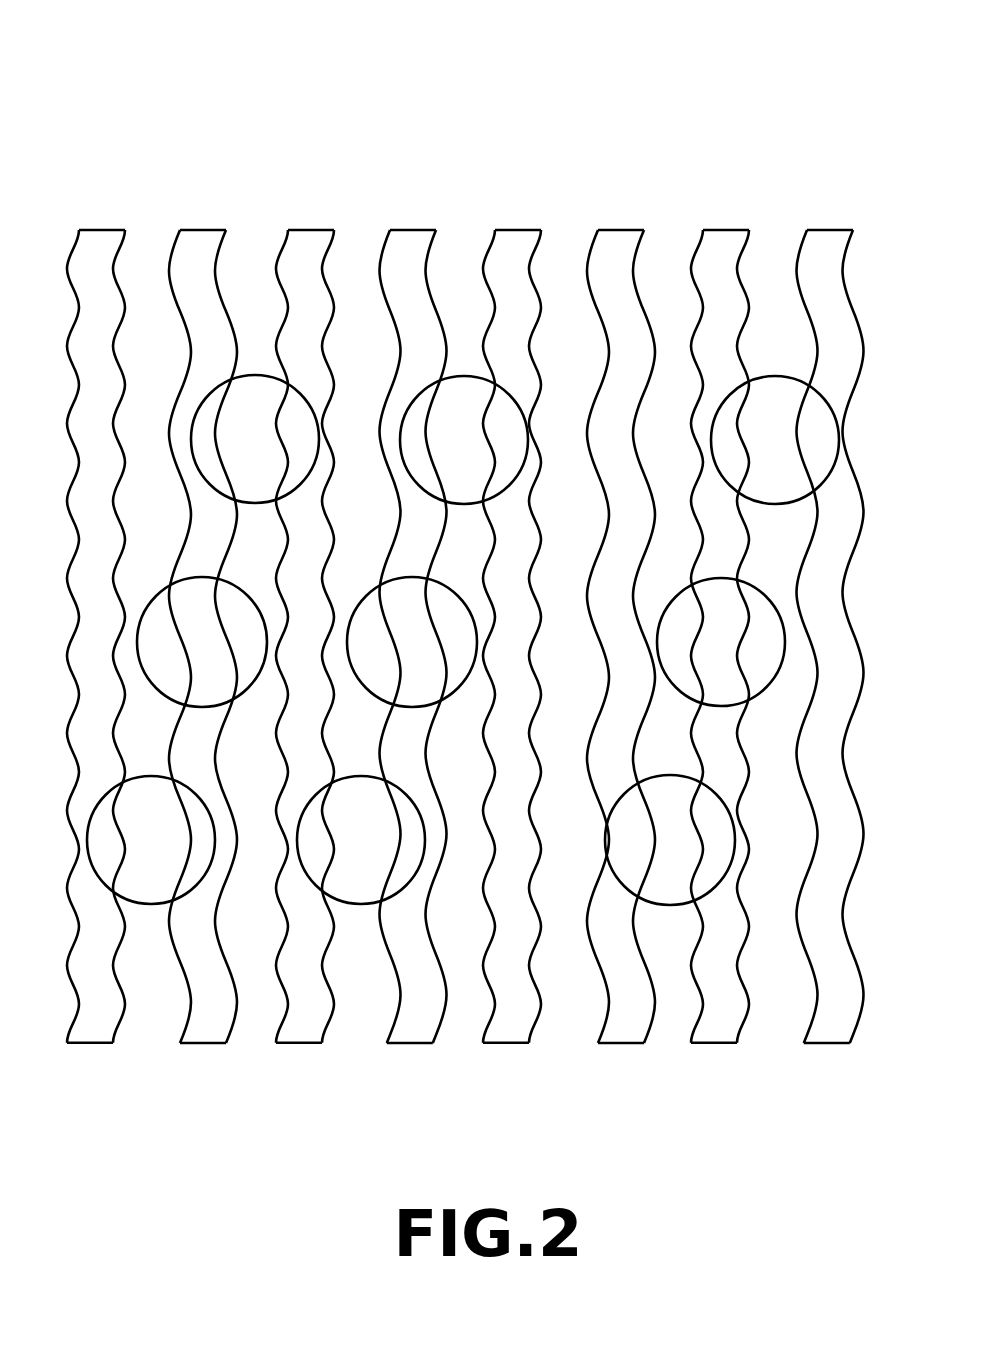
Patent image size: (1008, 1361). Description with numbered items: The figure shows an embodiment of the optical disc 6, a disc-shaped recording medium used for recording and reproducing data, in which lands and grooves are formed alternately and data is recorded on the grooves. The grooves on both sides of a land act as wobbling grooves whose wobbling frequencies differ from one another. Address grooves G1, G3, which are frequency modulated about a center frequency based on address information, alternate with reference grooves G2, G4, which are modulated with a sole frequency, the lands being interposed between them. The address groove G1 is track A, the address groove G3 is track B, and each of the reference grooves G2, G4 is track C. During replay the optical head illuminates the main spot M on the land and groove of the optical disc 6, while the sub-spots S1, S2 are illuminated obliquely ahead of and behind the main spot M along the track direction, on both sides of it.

The optical disc 6 is at (521, 110).
The address groove G1 is at (412, 620).
The reference groove G2 is at (512, 620).
The address groove G3 is at (622, 620).
The reference groove G4 is at (512, 620).
The sub-spot S1 is at (515, 439).
The main spot M is at (461, 642).
The sub-spot S2 is at (411, 840).